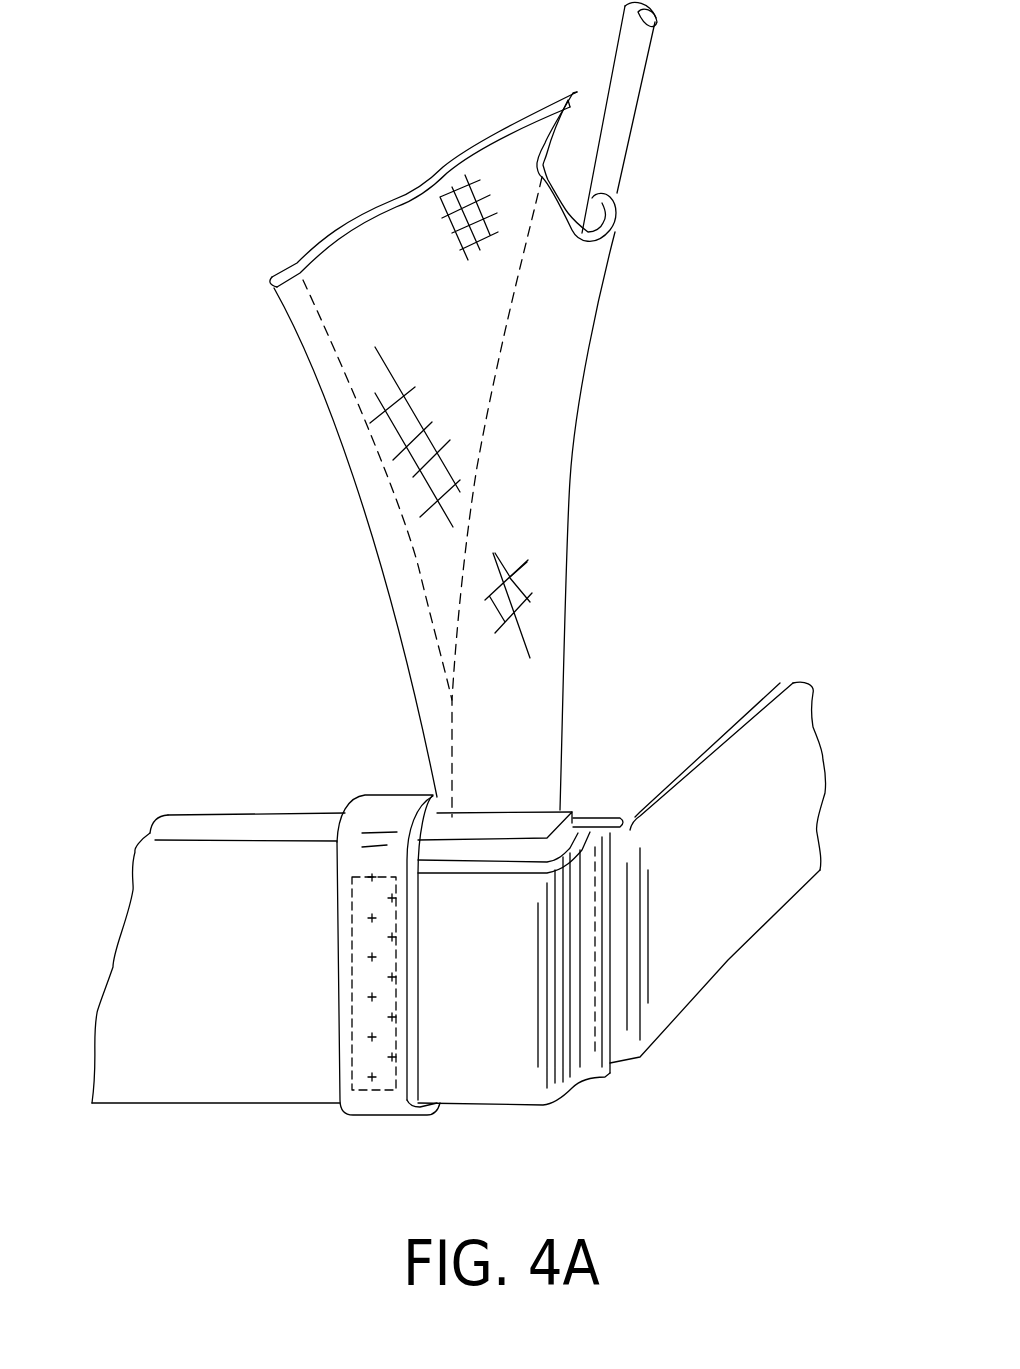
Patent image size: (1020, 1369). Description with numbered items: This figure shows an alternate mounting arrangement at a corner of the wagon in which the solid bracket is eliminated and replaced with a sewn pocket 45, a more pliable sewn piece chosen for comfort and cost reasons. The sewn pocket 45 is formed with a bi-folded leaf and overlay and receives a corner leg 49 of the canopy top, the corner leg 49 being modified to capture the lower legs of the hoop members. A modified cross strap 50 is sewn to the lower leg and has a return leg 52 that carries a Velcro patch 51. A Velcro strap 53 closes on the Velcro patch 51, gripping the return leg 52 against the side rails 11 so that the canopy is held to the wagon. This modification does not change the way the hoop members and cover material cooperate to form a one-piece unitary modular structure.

The side rails 11 is at (183, 830).
The sewn pocket 45 is at (602, 797).
The corner leg 49 is at (553, 443).
The cross strap 50 is at (770, 836).
The Velcro patch 51 is at (348, 1047).
The return leg 52 is at (493, 1015).
The Velcro strap 53 is at (385, 1120).